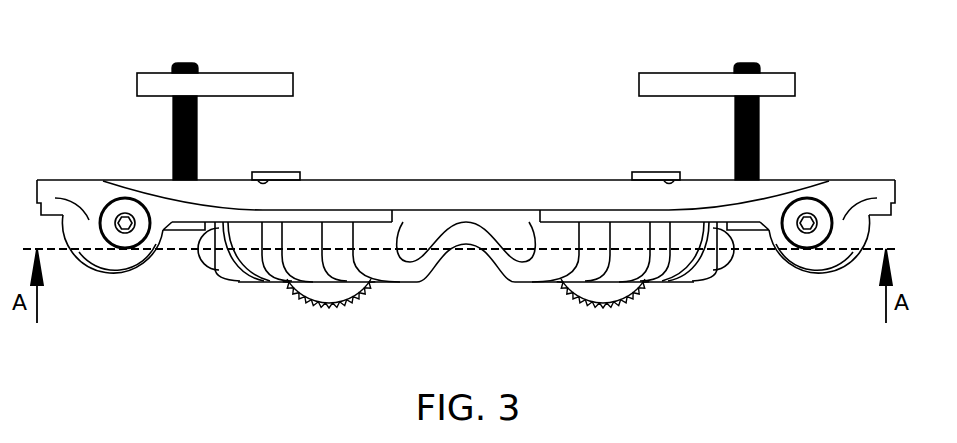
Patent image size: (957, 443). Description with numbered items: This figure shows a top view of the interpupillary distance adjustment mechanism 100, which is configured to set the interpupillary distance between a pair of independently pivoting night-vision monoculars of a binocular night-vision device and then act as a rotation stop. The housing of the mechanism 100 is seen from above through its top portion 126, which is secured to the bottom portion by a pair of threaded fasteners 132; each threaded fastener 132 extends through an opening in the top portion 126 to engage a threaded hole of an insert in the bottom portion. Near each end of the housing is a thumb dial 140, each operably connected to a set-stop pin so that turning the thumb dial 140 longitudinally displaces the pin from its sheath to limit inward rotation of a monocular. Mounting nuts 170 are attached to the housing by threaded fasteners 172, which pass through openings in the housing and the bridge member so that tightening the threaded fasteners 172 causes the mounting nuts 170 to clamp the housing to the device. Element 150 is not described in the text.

The interpupillary distance adjustment mechanism 100 is at (410, 189).
The top portion 126 is at (557, 190).
The threaded fastener 132 is at (110, 221).
The thumb dial 140 is at (317, 302).
The roller 150 is at (213, 262).
The mounting nut 170 is at (275, 84).
The threaded fastener 172 is at (172, 127).